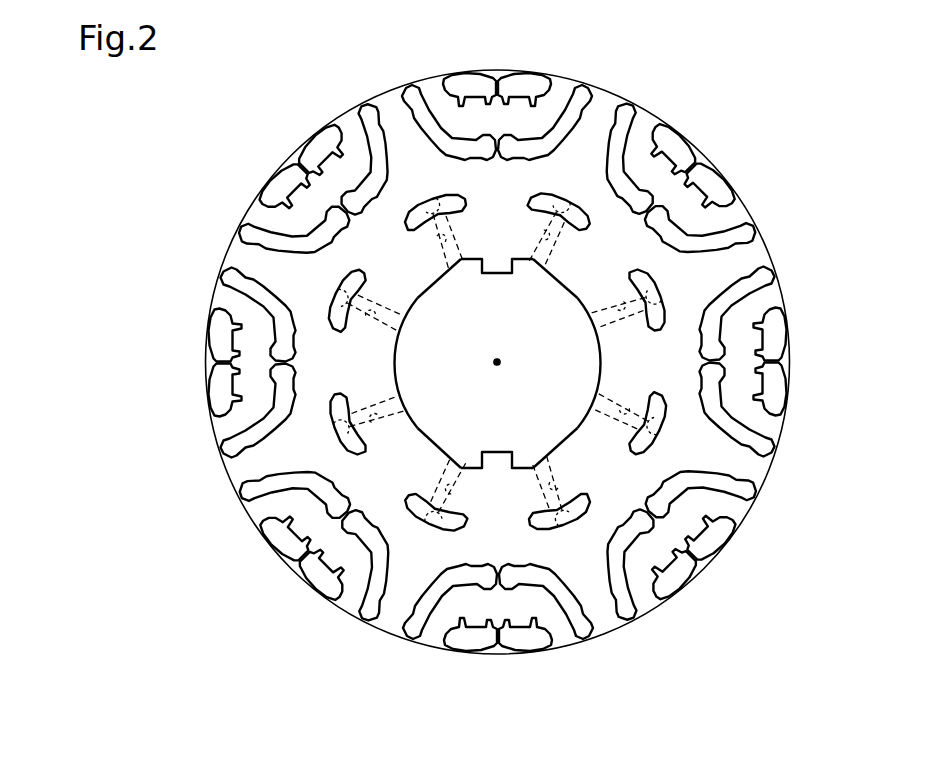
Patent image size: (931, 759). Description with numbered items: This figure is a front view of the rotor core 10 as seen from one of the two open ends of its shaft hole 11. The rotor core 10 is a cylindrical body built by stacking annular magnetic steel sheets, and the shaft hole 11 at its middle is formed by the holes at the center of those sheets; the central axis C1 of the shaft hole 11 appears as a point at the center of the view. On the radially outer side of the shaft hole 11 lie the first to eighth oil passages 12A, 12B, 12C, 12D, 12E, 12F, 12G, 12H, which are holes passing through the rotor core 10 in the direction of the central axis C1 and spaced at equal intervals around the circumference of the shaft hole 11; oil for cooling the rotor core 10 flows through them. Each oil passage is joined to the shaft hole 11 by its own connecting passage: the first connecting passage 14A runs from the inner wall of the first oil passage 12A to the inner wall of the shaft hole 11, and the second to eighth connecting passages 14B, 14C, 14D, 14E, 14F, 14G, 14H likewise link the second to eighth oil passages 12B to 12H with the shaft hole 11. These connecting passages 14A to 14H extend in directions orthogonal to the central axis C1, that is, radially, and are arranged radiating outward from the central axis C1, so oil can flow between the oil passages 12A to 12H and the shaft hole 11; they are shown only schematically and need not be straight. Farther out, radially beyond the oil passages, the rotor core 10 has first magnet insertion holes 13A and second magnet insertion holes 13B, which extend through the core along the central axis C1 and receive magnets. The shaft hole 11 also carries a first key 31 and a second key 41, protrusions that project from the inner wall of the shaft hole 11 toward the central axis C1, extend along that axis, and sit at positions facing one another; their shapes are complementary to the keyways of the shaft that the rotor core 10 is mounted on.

The rotor core 10 is at (737, 100).
The shaft hole 11 is at (530, 364).
The first oil passage 12A is at (569, 203).
The second oil passage 12B is at (633, 272).
The third oil passage 12C is at (655, 450).
The fourth oil passage 12D is at (586, 497).
The fifth oil passage 12E is at (409, 497).
The sixth oil passage 12F is at (340, 393).
The seventh oil passage 12G is at (363, 270).
The eighth oil passage 12H is at (426, 203).
The first magnet insertion hole 13A is at (338, 207).
The second magnet insertion hole 13B is at (285, 185).
The first connecting passage 14A is at (559, 283).
The second connecting passage 14B is at (592, 347).
The third connecting passage 14C is at (592, 378).
The fourth connecting passage 14D is at (556, 445).
The fifth connecting passage 14E is at (438, 445).
The sixth connecting passage 14F is at (403, 378).
The seventh connecting passage 14G is at (403, 347).
The eighth connecting passage 14H is at (435, 283).
The first key 31 is at (497, 258).
The second key 41 is at (497, 470).
The central axis C1 is at (497, 360).